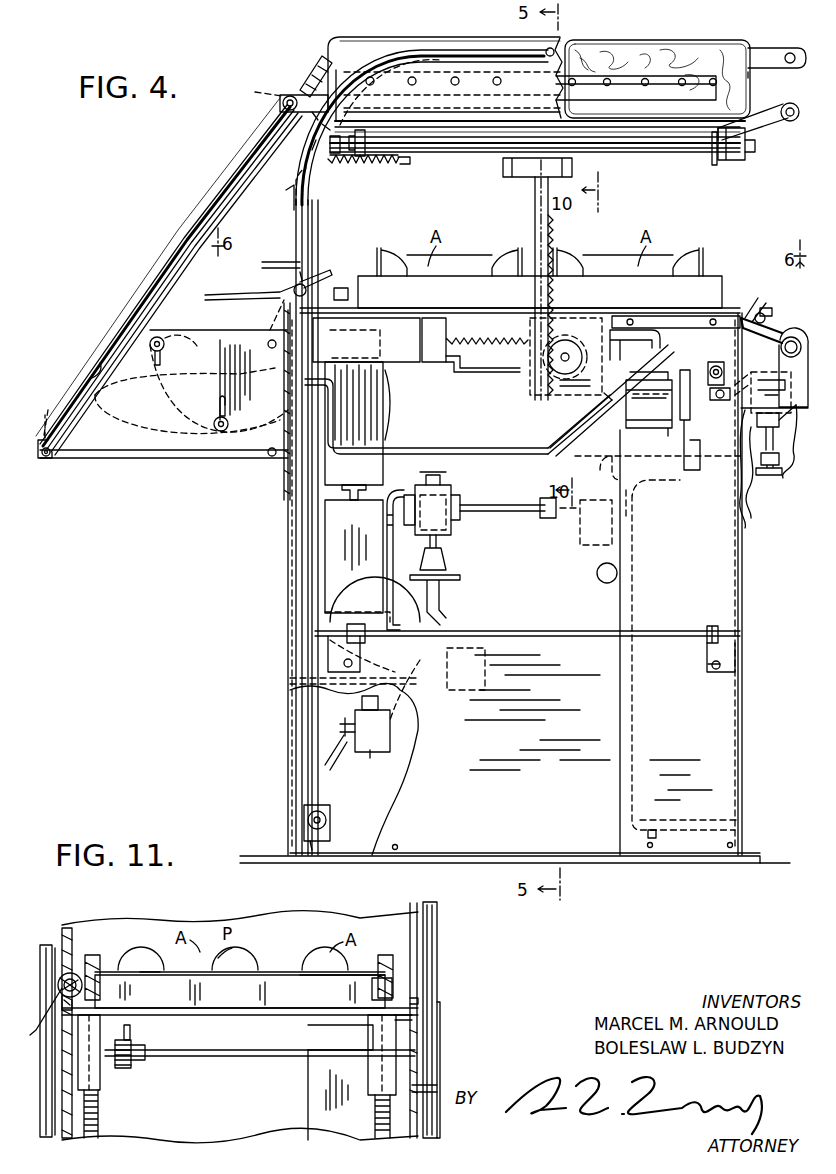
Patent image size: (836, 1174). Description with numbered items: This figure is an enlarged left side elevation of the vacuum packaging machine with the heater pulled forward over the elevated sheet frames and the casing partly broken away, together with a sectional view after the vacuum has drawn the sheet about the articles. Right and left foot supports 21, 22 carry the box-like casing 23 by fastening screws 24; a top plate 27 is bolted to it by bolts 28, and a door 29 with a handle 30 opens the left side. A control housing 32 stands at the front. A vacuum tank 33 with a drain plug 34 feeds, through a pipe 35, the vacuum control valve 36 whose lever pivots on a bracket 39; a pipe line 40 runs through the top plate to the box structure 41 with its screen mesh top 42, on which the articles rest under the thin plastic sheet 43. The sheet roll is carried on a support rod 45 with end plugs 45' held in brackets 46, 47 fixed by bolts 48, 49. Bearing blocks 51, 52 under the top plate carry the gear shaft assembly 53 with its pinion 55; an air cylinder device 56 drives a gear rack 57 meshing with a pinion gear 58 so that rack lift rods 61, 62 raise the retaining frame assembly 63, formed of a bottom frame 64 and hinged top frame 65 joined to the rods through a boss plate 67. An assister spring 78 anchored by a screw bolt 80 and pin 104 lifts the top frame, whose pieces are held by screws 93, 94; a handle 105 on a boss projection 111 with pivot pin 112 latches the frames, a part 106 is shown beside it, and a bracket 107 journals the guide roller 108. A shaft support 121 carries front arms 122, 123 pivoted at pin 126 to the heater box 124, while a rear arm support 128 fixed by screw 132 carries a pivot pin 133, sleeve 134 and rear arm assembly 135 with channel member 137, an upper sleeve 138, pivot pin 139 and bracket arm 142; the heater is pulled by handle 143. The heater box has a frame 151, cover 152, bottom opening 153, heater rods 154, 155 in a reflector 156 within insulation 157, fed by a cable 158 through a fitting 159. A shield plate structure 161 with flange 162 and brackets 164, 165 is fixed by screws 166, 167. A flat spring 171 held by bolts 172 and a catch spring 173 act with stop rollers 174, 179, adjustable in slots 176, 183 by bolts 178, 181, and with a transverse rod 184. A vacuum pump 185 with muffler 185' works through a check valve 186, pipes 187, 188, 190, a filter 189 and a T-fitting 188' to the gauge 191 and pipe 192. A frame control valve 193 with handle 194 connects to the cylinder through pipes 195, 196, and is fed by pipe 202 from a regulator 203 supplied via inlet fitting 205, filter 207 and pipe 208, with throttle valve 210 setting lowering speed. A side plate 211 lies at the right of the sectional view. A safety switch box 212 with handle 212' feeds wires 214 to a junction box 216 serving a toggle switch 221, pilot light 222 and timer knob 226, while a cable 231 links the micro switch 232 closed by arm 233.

In FIG. 4, the right hand foot support 21 is at (350, 845).
In FIG. 4, the left hand foot support 22 is at (666, 858).
In FIG. 4, the box-like casing 23 is at (296, 640).
In FIG. 11, the box-like casing 23 is at (278, 1128).
In FIG. 4, the fastening screws 24 is at (398, 852).
In FIG. 4, the top plate 27 is at (732, 312).
In FIG. 11, the top plate 27 is at (268, 1020).
In FIG. 4, the fastening bolts 28 is at (634, 316).
In FIG. 4, the door 29 is at (475, 855).
In FIG. 4, the handle 30 is at (600, 575).
In FIG. 4, the control housing 32 is at (778, 456).
In FIG. 4, the vacuum tank 33 is at (638, 798).
In FIG. 4, the drain plug 34 is at (656, 834).
In FIG. 4, the pipe 35 is at (665, 465).
In FIG. 4, the vacuum control valve 36 is at (636, 405).
In FIG. 4, the bracket 39 is at (705, 384).
In FIG. 4, the pipe line 40 is at (640, 334).
In FIG. 4, the box structure 41 is at (705, 280).
In FIG. 11, the box structure 41 is at (125, 992).
In FIG. 11, the screen mesh top 42 is at (314, 978).
In FIG. 11, the thin plastic sheet 43 is at (282, 956).
In FIG. 4, the support rod 45 is at (527, 613).
In FIG. 4, the end plugs 45' is at (532, 615).
In FIG. 4, the bracket 46 is at (738, 670).
In FIG. 4, the bracket 47 is at (365, 658).
In FIG. 4, the fastening bolt 48 is at (712, 668).
In FIG. 4, the fastening bolt 49 is at (408, 678).
In FIG. 11, the right hand bearing block 51 is at (370, 1040).
In FIG. 4, the left hand bearing block 52 is at (580, 400).
In FIG. 11, the left hand bearing block 52 is at (100, 1078).
In FIG. 4, the gear shaft assembly 53 is at (572, 352).
In FIG. 11, the gear shaft assembly 53 is at (218, 1060).
In FIG. 4, the left hand rack gear pinion 55 is at (560, 380).
In FIG. 4, the two-way air-operated cylinder device 56 is at (396, 355).
In FIG. 11, the two-way air-operated cylinder device 56 is at (132, 1030).
In FIG. 4, the operating gear rack 57 is at (460, 346).
In FIG. 11, the operating gear rack 57 is at (140, 1044).
In FIG. 4, the pinion gear 58 is at (586, 376).
In FIG. 11, the pinion gear 58 is at (124, 1068).
In FIG. 4, the rack lift rod 61 is at (534, 218).
In FIG. 11, the rack lift rod 61 is at (100, 1122).
In FIG. 11, the rack lift rod 62 is at (376, 1128).
In FIG. 4, the plastic sheet retaining frame assembly 63 is at (664, 166).
In FIG. 11, the plastic sheet retaining frame assembly 63 is at (392, 952).
In FIG. 4, the bottom frame 64 is at (650, 156).
In FIG. 11, the bottom frame 64 is at (395, 985).
In FIG. 4, the top frame 65 is at (758, 113).
In FIG. 11, the top frame 65 is at (82, 972).
In FIG. 4, the boss plate 67 is at (510, 178).
In FIG. 4, the top frame lift assister spring 78 is at (360, 166).
In FIG. 4, the screw bolt 80 is at (404, 166).
In FIG. 4, the front fastening screw 93 is at (752, 156).
In FIG. 4, the rear fastening screw 94 is at (385, 92).
In FIG. 4, the anchor pin 104 is at (305, 122).
In FIG. 4, the handle 105 is at (776, 128).
In FIG. 4, the end block 106 is at (738, 165).
In FIG. 4, the outwardly-extending bracket 107 is at (357, 171).
In FIG. 4, the plastic sheet guide roller 108 is at (458, 150).
In FIG. 11, the plastic sheet guide roller 108 is at (66, 930).
In FIG. 4, the boss projection 111 is at (714, 166).
In FIG. 4, the horizontal pivot pin 112 is at (358, 158).
In FIG. 4, the shaft support 121 is at (302, 822).
In FIG. 11, the right hand front heater supporting arm 122 is at (432, 1050).
In FIG. 4, the left hand front heater supporting arm 123 is at (300, 559).
In FIG. 11, the left hand front heater supporting arm 123 is at (42, 945).
In FIG. 4, the overhead heater box 124 is at (394, 30).
In FIG. 4, the pivot pin connection 126 is at (520, 40).
In FIG. 4, the left rear arm support 128 is at (127, 456).
In FIG. 4, the fastening screw 132 is at (262, 470).
In FIG. 4, the pivot pin 133 is at (48, 462).
In FIG. 4, the sleeve 134 is at (45, 424).
In FIG. 4, the rear heater supporting arm assembly 135 is at (175, 294).
In FIG. 4, the left channel member 137 is at (92, 378).
In FIG. 4, the sleeve 138 is at (249, 90).
In FIG. 4, the pivot pin 139 is at (282, 104).
In FIG. 4, the bracket arm 142 is at (305, 92).
In FIG. 4, the handle 143 is at (765, 62).
In FIG. 4, the sheet metal frame 151 is at (760, 50).
In FIG. 4, the removable top cover 152 is at (676, 44).
In FIG. 4, the opening 153 is at (655, 97).
In FIG. 4, the heater rod 154 is at (660, 55).
In FIG. 4, the heater rod 155 is at (622, 45).
In FIG. 4, the reflector 156 is at (714, 52).
In FIG. 4, the heat insulating mass 157 is at (580, 48).
In FIG. 4, the three-wire cable 158 is at (158, 274).
In FIG. 4, the fitting 159 is at (312, 62).
In FIG. 4, the metal shield plate structure 161 is at (290, 188).
In FIG. 11, the metal shield plate structure 161 is at (168, 918).
In FIG. 4, the reinforcing flange 162 is at (272, 268).
In FIG. 11, the right hand bracket 164 is at (420, 958).
In FIG. 4, the left hand bracket 165 is at (318, 278).
In FIG. 11, the left hand bracket 165 is at (78, 932).
In FIG. 11, the fastening screw 166 is at (418, 1000).
In FIG. 4, the fastening screw 167 is at (340, 287).
In FIG. 4, the flat movement-resisting spring 171 is at (170, 405).
In FIG. 4, the screw bolts 172 is at (112, 398).
In FIG. 4, the flat catch spring 173 is at (240, 300).
In FIG. 4, the upper stop roller 174 is at (158, 328).
In FIG. 4, the elongated slot 176 is at (176, 350).
In FIG. 4, the screw bolt 178 is at (207, 377).
In FIG. 4, the lower stop roller 179 is at (222, 433).
In FIG. 4, the bolt 181 is at (230, 424).
In FIG. 4, the elongated slot 183 is at (226, 406).
In FIG. 4, the transverse rod 184 is at (264, 400).
In FIG. 4, the vacuum pump 185 is at (330, 599).
In FIG. 4, the exhaust valve and muffler 185' is at (487, 666).
In FIG. 4, the check valve 186 is at (450, 500).
In FIG. 4, the pipe 187 is at (394, 540).
In FIG. 4, the pipe 188 is at (502, 515).
In FIG. 4, the T-fitting 188' is at (530, 496).
In FIG. 4, the air filter 189 is at (580, 535).
In FIG. 4, the pipe 190 is at (634, 536).
In FIG. 4, the vacuum gauge 191 is at (767, 301).
In FIG. 4, the small pipe line 192 is at (560, 438).
In FIG. 4, the frame movement control air valve 193 is at (757, 470).
In FIG. 4, the handle 194 is at (800, 338).
In FIG. 4, the pipe 195 is at (484, 375).
In FIG. 4, the pipe 196 is at (436, 456).
In FIG. 4, the pipe 202 is at (764, 392).
In FIG. 4, the pressure regulator 203 is at (772, 461).
In FIG. 4, the air inlet fitting 205 is at (713, 361).
In FIG. 4, the air filter 207 is at (783, 478).
In FIG. 4, the pipe 208 is at (768, 366).
In FIG. 4, the throttle valve 210 is at (677, 642).
In FIG. 11, the plate 211 is at (424, 1028).
In FIG. 4, the main safety switch box 212 is at (426, 416).
In FIG. 11, the main safety switch box 212 is at (302, 1095).
In FIG. 4, the switch handle 212' is at (380, 423).
In FIG. 11, the switch handle 212' is at (442, 1053).
In FIG. 4, the cable wires 214 is at (360, 491).
In FIG. 4, the junction box 216 is at (340, 518).
In FIG. 4, the toggle switch 221 is at (790, 330).
In FIG. 4, the heater pilot light 222 is at (771, 307).
In FIG. 4, the turn knob 226 is at (780, 305).
In FIG. 4, the two wire cable 231 is at (360, 700).
In FIG. 4, the micro switch 232 is at (366, 752).
In FIG. 4, the arm 233 is at (334, 785).